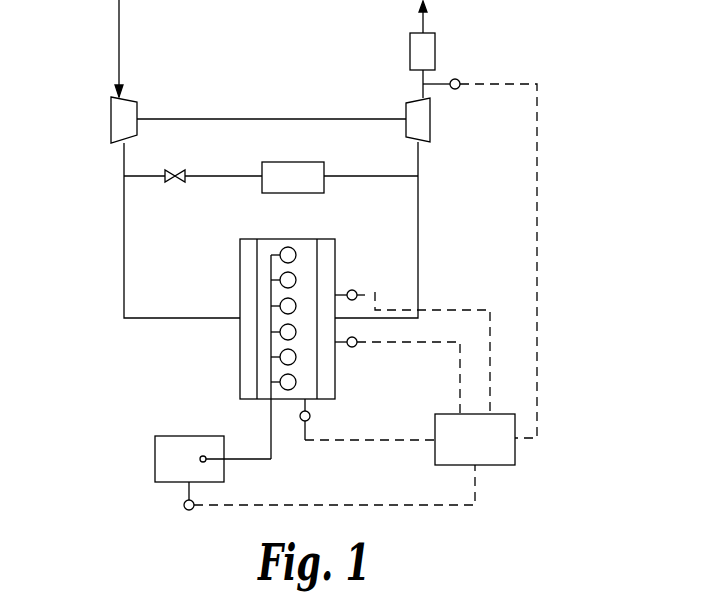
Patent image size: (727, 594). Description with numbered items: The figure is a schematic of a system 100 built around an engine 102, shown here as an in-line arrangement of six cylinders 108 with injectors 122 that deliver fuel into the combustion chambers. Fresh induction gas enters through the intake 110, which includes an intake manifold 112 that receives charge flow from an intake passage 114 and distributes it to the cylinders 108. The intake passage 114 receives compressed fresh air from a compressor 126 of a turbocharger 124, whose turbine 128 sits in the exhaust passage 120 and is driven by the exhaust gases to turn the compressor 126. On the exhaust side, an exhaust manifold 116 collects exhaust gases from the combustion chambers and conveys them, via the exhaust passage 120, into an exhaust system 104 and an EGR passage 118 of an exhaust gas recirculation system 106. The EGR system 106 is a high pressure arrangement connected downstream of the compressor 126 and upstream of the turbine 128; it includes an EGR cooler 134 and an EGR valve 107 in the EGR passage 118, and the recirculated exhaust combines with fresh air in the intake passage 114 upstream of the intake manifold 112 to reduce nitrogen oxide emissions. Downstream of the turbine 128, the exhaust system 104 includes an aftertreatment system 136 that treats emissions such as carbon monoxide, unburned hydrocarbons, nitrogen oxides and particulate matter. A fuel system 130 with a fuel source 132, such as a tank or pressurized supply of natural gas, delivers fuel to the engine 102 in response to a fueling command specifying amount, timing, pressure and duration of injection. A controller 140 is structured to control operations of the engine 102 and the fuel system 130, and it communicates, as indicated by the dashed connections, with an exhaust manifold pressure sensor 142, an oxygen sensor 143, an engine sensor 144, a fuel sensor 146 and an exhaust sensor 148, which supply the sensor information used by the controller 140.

The system 100 is at (587, 180).
The engine 102 is at (288, 295).
The exhaust system 104 is at (420, 292).
The exhaust gas recirculation (EGR) system 106 is at (390, 185).
The EGR valve 107 is at (175, 170).
The cylinders 108 is at (285, 247).
The intake 110 is at (120, 35).
The intake manifold 112 is at (240, 292).
The intake passage 114 is at (124, 237).
The exhaust manifold 116 is at (327, 253).
The EGR passage 118 is at (233, 175).
The exhaust passage 120 is at (420, 243).
The injectors 122 is at (292, 360).
The turbocharger 124 is at (268, 87).
The compressor 126 is at (111, 112).
The turbine 128 is at (430, 123).
The fuel system 130 is at (194, 368).
The fuel source 132 is at (192, 471).
The EGR cooler 134 is at (271, 161).
The aftertreatment system 136 is at (435, 42).
The controller 140 is at (493, 449).
The exhaust manifold pressure (EMP) sensor 142 is at (355, 348).
The oxygen sensor 143 is at (352, 290).
The engine sensor 144 is at (310, 416).
The fuel sensor 146 is at (184, 505).
The exhaust sensor 148 is at (460, 84).